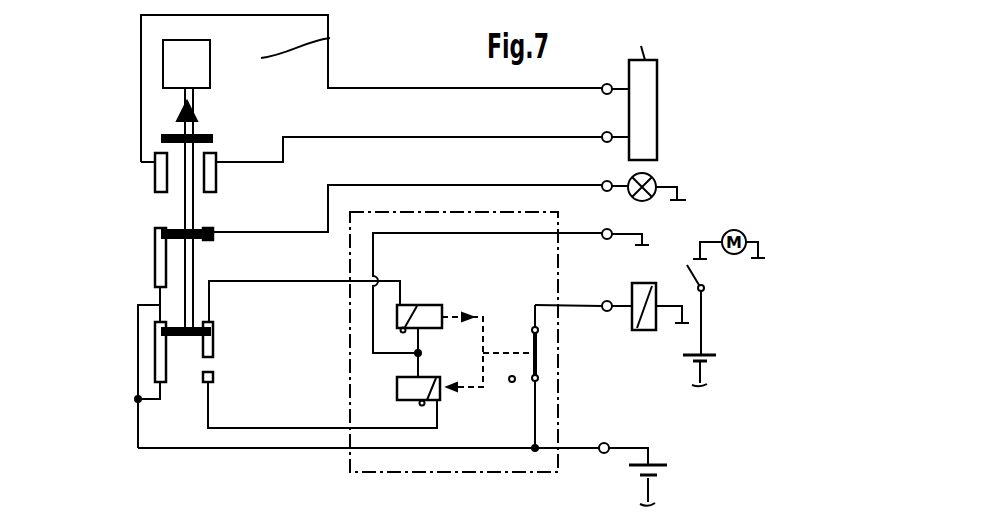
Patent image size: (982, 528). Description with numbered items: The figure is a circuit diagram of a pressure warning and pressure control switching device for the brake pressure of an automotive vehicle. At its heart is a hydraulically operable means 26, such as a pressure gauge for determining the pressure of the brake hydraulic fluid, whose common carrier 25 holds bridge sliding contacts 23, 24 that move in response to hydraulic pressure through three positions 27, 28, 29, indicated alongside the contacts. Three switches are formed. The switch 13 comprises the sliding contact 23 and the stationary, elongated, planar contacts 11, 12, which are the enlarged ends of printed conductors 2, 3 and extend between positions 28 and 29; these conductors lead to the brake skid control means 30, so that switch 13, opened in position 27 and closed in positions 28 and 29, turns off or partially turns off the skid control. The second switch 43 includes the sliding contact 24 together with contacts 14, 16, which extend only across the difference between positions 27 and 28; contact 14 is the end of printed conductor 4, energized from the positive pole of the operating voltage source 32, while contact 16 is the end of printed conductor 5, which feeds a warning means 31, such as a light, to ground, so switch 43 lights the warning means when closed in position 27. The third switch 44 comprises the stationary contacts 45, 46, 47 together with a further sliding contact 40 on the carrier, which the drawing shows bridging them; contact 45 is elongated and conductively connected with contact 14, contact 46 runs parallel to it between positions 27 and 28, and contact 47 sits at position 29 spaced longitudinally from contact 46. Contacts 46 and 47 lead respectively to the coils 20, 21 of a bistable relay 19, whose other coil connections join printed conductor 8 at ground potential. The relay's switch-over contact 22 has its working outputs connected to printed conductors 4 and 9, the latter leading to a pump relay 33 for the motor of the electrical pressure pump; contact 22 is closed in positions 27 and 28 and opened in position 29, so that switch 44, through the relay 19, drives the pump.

The printed conductor 2 is at (428, 88).
The printed conductor 3 is at (418, 137).
The printed conductor 4 is at (182, 449).
The printed conductor 5 is at (395, 185).
The printed conductor 8 is at (532, 235).
The printed conductor 9 is at (575, 305).
The stationary contact 11 is at (155, 175).
The stationary contact 12 is at (217, 175).
The switch 13 is at (233, 136).
The stationary contact 14 is at (155, 241).
The contact 16 is at (214, 232).
The bistable relay 19 is at (517, 458).
The coil 20 is at (430, 305).
The coil 21 is at (441, 395).
The switch-over contact 22 is at (533, 343).
The sliding contact 23 is at (204, 134).
The sliding contact 24 is at (175, 228).
The common carrier 25 is at (196, 97).
The hydraulically operable means 26 is at (211, 57).
The position 27 is at (100, 134).
The position 28 is at (100, 159).
The position 29 is at (100, 184).
The brake skid control means 30 is at (650, 83).
The warning means 31 is at (652, 179).
The operating voltage source 32 is at (658, 470).
The pump relay 33 is at (645, 331).
The movable contact plate 40 is at (178, 336).
The second switch 43 is at (214, 247).
The third switch 44 is at (241, 339).
The stationary contact 45 is at (155, 361).
The stationary contact 46 is at (216, 322).
The stationary contact 47 is at (214, 376).